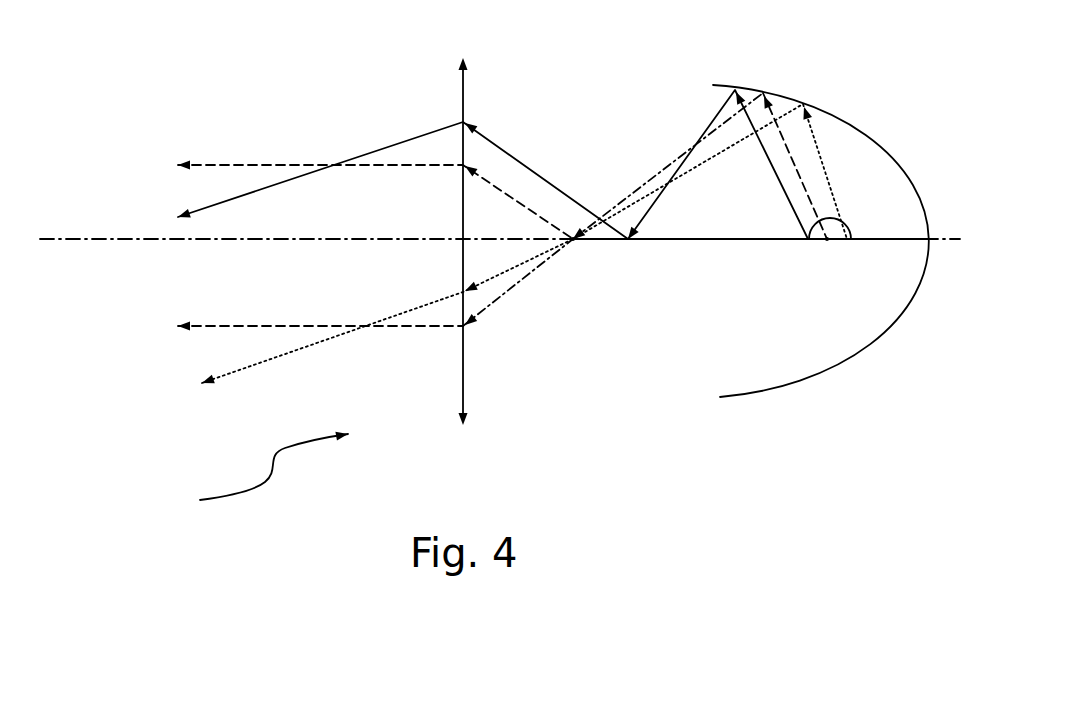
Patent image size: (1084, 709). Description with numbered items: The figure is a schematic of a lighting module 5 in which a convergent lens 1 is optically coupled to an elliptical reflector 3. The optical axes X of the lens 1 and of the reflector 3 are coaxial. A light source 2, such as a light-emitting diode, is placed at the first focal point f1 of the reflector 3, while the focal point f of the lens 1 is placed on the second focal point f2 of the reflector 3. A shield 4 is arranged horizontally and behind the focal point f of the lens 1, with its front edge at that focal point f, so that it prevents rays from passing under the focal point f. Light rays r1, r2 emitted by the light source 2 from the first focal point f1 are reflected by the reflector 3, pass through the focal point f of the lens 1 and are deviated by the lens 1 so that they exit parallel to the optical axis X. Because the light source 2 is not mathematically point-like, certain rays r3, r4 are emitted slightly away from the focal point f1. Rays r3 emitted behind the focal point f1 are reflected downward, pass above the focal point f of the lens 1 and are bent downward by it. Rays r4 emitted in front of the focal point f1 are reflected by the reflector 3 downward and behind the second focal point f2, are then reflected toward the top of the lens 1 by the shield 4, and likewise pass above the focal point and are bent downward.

The lens 1 is at (463, 85).
The light source 2 is at (840, 240).
The elliptical reflector 3 is at (863, 353).
The shield 4 is at (608, 240).
The lighting module 5 is at (258, 472).
The optical axis X is at (80, 239).
The focal point of the lens f is at (597, 144).
The second focal point of the reflector f2 is at (607, 239).
The first focal point of the reflector f1 is at (827, 241).
The light ray r1 is at (497, 168).
The light ray r2 is at (369, 307).
The light ray r3 is at (521, 262).
The light ray r4 is at (475, 166).